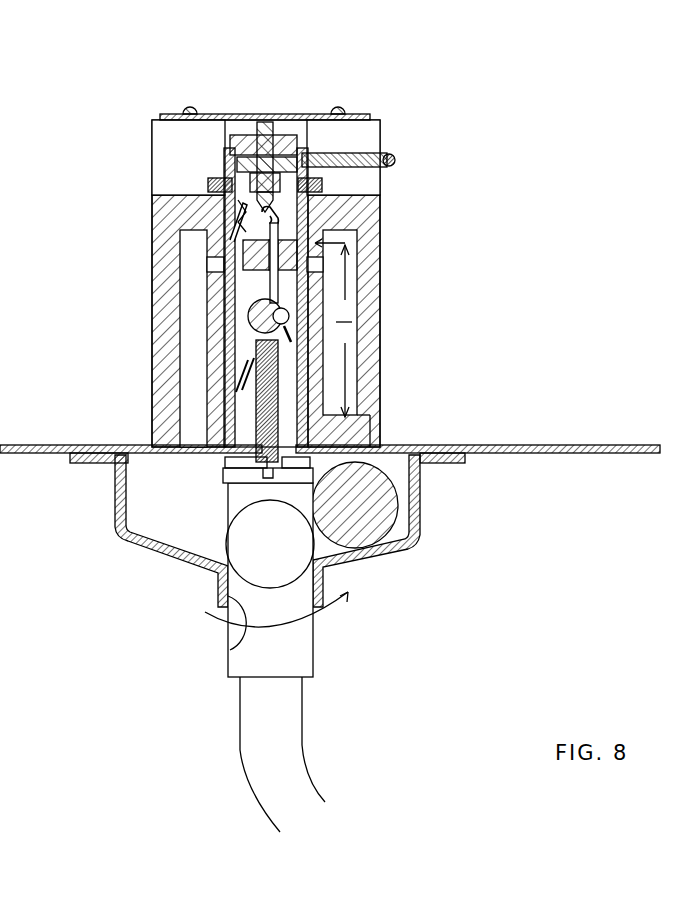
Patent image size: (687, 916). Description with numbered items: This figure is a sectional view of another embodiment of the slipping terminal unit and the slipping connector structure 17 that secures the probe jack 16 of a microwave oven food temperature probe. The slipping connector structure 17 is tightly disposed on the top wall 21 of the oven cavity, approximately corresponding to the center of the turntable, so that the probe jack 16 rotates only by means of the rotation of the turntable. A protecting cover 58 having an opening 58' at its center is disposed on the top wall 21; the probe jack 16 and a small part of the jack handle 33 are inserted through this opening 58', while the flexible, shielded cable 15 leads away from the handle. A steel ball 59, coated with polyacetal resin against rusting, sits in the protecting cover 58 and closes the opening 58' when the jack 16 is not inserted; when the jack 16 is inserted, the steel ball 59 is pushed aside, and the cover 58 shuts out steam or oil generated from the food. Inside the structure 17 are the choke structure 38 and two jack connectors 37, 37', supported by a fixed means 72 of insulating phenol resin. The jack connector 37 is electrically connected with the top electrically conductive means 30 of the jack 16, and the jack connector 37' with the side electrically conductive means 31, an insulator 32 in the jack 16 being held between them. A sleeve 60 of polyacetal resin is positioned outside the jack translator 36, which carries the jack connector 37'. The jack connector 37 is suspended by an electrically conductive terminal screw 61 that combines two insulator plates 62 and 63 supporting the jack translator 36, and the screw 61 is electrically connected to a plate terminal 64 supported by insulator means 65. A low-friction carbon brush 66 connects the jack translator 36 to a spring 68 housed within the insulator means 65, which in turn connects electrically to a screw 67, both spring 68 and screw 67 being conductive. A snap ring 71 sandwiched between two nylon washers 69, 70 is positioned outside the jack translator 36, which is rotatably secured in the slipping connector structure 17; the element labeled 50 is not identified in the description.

The flexible, shielded cable 15 is at (273, 808).
The probe jack 16 is at (258, 420).
The slipping connector structure 17 is at (157, 267).
The top wall 21 is at (603, 453).
The top electrically conductive means 30 is at (285, 308).
The side electrically conductive means 31 is at (253, 422).
The insulator 32 is at (243, 365).
The jack handle 33 is at (297, 657).
The jack translator 36 is at (245, 245).
The jack connector 37 is at (383, 339).
The jack connector 37' is at (174, 337).
The choke structure 38 is at (190, 285).
The block 50 is at (307, 137).
The protecting cover 58 is at (325, 531).
The opening 58' is at (236, 657).
The steel ball 59 is at (380, 523).
The sleeve 60 is at (230, 312).
The terminal screw 61 is at (165, 202).
The insulator plate 62 is at (233, 137).
The insulator plate 63 is at (200, 163).
The plate terminal 64 is at (287, 137).
The insulator means 65 is at (163, 145).
The carbon brush 66 is at (383, 138).
The screw 67 is at (388, 152).
The spring 68 is at (325, 186).
The washer 69 is at (320, 196).
The washer 70 is at (312, 240).
The snap ring 71 is at (312, 214).
The fixed means 72 is at (240, 210).